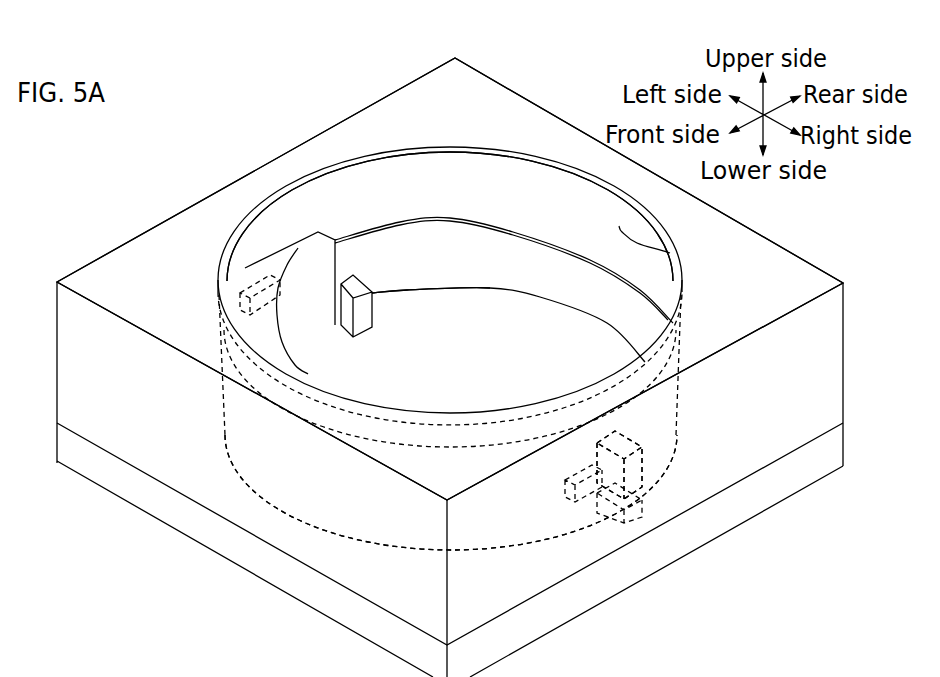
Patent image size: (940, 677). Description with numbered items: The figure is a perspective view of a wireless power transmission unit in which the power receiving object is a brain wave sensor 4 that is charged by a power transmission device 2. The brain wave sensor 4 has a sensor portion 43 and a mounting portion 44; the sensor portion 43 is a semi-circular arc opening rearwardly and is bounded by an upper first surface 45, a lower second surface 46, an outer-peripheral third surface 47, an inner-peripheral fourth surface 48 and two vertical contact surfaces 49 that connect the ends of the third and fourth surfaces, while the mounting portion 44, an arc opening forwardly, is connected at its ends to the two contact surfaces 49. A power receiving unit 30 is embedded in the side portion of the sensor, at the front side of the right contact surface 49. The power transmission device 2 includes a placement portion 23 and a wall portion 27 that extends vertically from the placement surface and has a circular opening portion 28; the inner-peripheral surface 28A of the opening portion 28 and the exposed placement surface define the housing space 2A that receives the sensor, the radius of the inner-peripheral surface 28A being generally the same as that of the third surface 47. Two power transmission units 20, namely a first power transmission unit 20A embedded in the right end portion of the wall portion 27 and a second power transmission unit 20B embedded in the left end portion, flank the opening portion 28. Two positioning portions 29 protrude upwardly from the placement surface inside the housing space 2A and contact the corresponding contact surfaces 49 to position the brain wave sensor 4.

The power transmission device 2 is at (317, 133).
The housing space 2A is at (507, 270).
The brain wave sensor 4 is at (313, 230).
The power transmission units 20 is at (459, 375).
The first power transmission unit 20A is at (633, 517).
The second power transmission unit 20B is at (243, 287).
The placement portion 23 is at (610, 573).
The wall portion 27 is at (135, 263).
The opening portion 28 is at (692, 276).
The inner-peripheral surface 28A is at (670, 253).
The positioning portions 29 is at (373, 322).
The power receiving unit 30 is at (580, 510).
The sensor portion 43 is at (290, 517).
The mounting portion 44 is at (453, 253).
The first surface 45 is at (275, 385).
The second surface 46 is at (420, 553).
The third surface 47 is at (273, 465).
The fourth surface 48 is at (307, 322).
The contact surfaces 49 is at (380, 250).